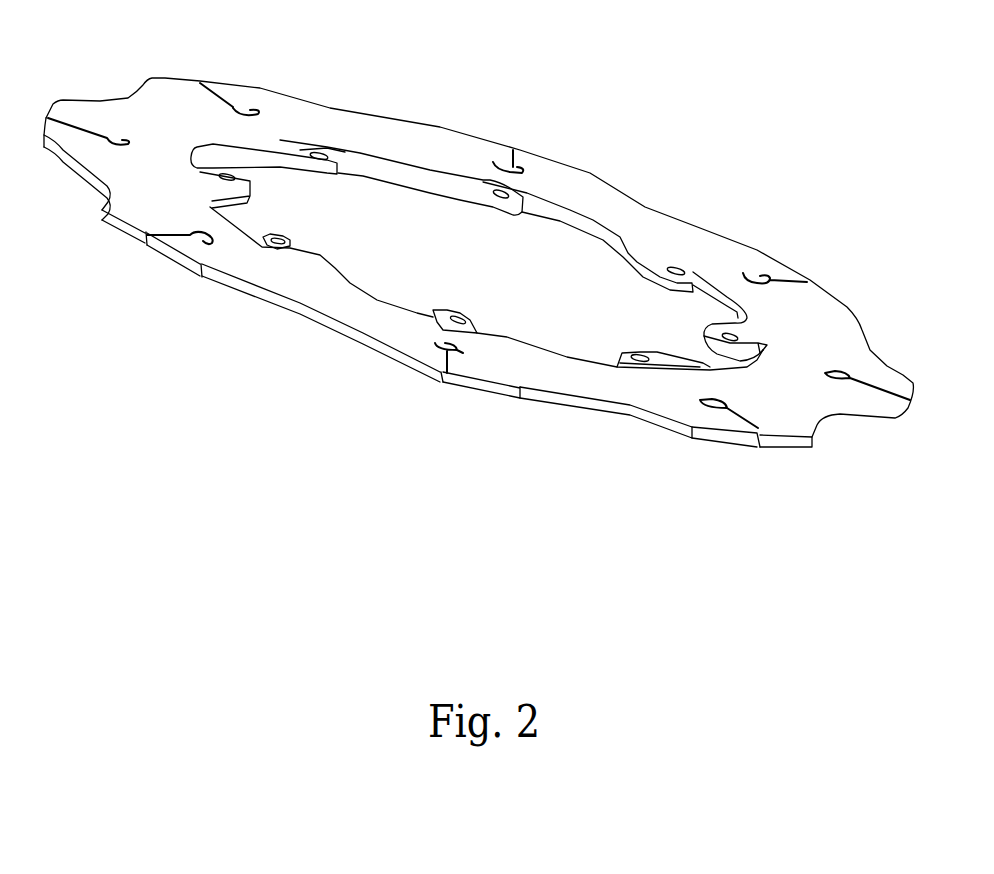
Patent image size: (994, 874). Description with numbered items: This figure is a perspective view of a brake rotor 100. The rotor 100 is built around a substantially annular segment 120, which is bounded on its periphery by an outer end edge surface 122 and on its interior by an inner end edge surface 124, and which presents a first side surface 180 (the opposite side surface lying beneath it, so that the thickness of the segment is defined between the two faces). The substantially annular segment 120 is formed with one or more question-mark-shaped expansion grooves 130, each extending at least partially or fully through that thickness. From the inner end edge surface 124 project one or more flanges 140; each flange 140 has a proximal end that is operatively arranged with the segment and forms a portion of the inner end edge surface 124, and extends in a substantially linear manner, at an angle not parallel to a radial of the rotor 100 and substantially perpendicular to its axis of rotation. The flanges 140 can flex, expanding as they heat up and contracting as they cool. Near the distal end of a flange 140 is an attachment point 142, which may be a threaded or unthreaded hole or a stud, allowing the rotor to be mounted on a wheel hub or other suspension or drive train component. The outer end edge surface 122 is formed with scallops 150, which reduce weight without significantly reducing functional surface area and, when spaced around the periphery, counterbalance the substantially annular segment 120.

The rotor 100 is at (645, 90).
The substantially annular segment 120 is at (823, 333).
The outer end edge surface 122 is at (490, 387).
The inner end edge surface 124 is at (564, 212).
The question-mark-shaped expansion groove 130 is at (767, 417).
The flange 140 is at (308, 247).
The attachment point 142 is at (343, 158).
The scallop 150 is at (275, 300).
The first side surface 180 is at (380, 132).